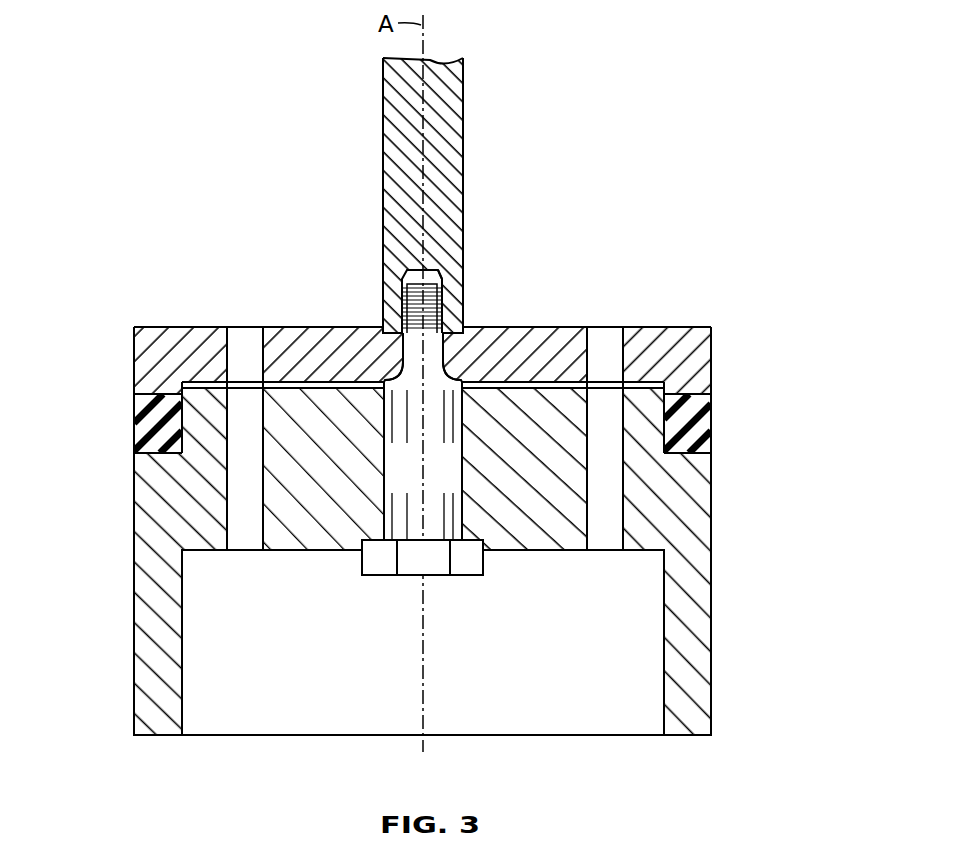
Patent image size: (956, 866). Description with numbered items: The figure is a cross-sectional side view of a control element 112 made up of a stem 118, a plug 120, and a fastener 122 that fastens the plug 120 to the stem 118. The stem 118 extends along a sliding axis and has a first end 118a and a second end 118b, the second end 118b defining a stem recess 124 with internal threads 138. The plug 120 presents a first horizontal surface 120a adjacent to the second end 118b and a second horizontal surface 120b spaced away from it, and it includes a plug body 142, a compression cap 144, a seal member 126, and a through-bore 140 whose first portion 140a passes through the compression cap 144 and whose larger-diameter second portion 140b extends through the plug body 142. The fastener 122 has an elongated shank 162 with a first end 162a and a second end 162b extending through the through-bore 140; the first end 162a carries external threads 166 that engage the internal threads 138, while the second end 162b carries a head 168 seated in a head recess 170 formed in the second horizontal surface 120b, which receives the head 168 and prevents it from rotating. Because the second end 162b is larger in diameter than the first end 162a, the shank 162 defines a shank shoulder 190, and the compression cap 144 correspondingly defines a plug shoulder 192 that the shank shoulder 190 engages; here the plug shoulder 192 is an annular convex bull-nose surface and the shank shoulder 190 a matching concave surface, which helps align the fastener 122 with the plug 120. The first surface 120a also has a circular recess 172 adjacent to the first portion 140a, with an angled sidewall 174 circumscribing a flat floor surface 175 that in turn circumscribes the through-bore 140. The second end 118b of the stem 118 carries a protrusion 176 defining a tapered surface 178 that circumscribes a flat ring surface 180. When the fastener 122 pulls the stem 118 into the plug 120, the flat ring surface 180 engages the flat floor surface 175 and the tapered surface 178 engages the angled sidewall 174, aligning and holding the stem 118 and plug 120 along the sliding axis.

The control element 112 is at (278, 216).
The stem 118 is at (440, 164).
The first end of the stem 118a is at (452, 104).
The second end of the stem 118b is at (382, 313).
The plug 120 is at (714, 323).
The first horizontal surface 120a is at (162, 327).
The second horizontal surface 120b is at (213, 549).
The fastener 122 is at (297, 550).
The stem recess 124 is at (445, 290).
The internal threads 138 is at (517, 266).
The seal member 126 is at (148, 428).
The through-bore 140 is at (456, 411).
The first portion of the through-bore 140a is at (445, 347).
The second portion of the through-bore 140b is at (435, 523).
The plug body 142 is at (711, 628).
The compression cap 144 is at (686, 332).
The elongated shank 162 is at (385, 440).
The first end of the shank 162a is at (404, 279).
The second end of the shank 162b is at (462, 503).
The external threads 166 is at (402, 290).
The head 168 is at (400, 495).
The head recess 170 is at (480, 541).
The circular recess 172 is at (448, 300).
The angled sidewall 174 is at (462, 293).
The flat floor surface 175 is at (443, 277).
The protrusion 176 is at (405, 325).
The tapered surface 178 is at (400, 345).
The flat ring surface 180 is at (383, 385).
The shank shoulder 190 is at (460, 365).
The plug shoulder 192 is at (378, 336).